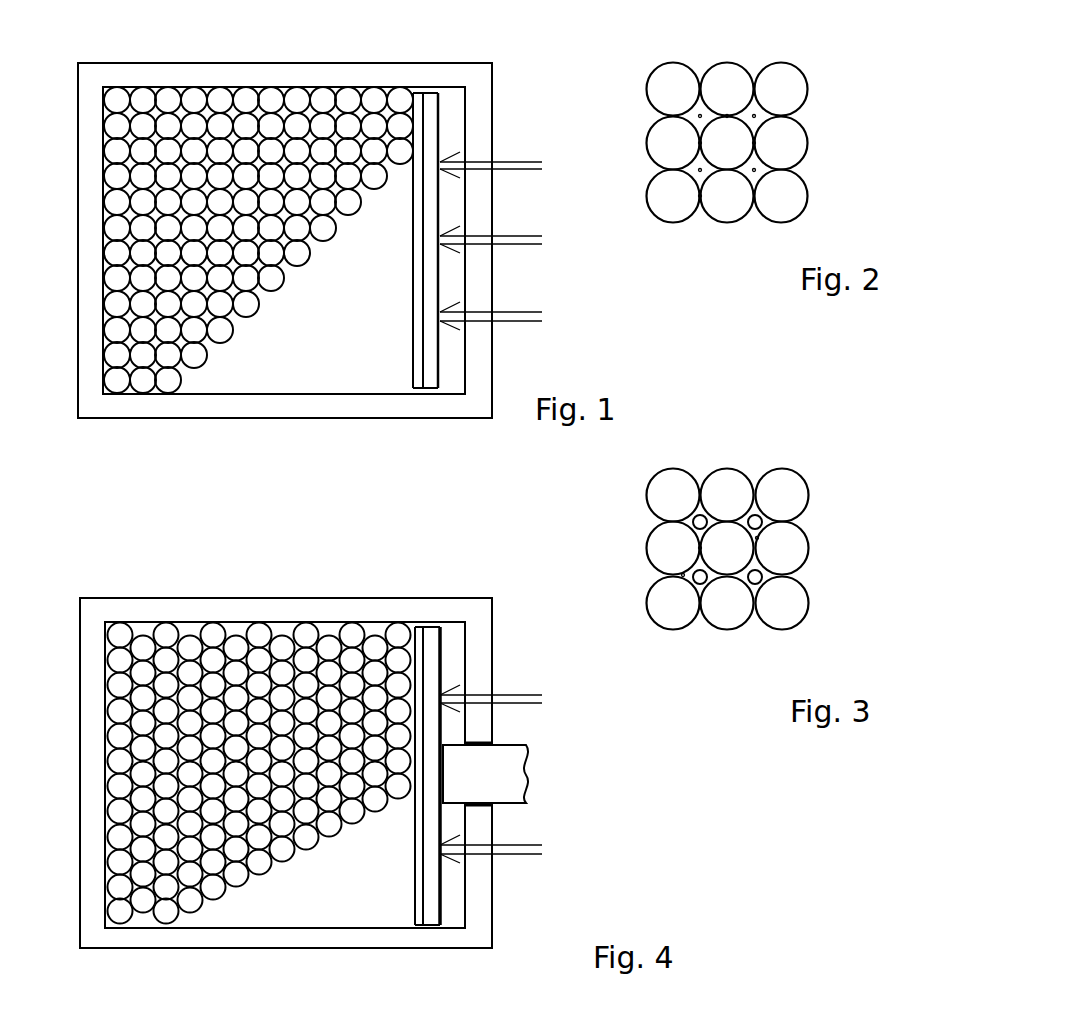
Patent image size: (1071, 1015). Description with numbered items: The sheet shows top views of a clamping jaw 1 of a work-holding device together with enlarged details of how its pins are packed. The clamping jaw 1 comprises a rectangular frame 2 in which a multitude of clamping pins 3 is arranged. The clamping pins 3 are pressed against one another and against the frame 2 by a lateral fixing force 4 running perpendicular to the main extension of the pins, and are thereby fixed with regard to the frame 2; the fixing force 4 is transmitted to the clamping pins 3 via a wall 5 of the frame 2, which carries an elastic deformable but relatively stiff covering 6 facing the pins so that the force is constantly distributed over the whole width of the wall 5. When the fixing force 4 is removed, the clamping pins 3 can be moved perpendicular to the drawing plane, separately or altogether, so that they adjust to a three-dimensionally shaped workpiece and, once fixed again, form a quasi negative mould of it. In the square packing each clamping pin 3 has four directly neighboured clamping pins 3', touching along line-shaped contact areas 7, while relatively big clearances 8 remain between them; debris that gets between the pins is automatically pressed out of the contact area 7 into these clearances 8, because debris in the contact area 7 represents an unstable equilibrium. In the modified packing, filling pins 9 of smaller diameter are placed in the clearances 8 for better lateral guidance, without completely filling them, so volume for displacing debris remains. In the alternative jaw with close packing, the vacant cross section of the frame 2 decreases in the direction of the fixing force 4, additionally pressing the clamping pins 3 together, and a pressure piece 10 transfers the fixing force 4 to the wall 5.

In FIG. 1, the clamping jaw 1 is at (70, 364).
In FIG. 4, the clamping jaw 1 is at (75, 792).
In FIG. 1, the frame 2 is at (300, 408).
In FIG. 4, the frame 2 is at (262, 612).
In FIG. 1, the clamping pin 3 is at (258, 208).
In FIG. 2, the clamping pin 3 is at (742, 139).
In FIG. 3, the clamping pin 3 is at (705, 545).
In FIG. 4, the clamping pin 3 is at (259, 733).
In FIG. 2, the neighboured clamping pin 3' is at (724, 140).
In FIG. 3, the neighboured clamping pin 3' is at (727, 545).
In FIG. 1, the fixing force 4 is at (513, 318).
In FIG. 4, the fixing force 4 is at (515, 700).
In FIG. 1, the wall 5 is at (430, 130).
In FIG. 4, the wall 5 is at (433, 882).
In FIG. 1, the covering 6 is at (416, 390).
In FIG. 4, the covering 6 is at (420, 912).
In FIG. 2, the contact area 7 is at (710, 124).
In FIG. 3, the contact area 7 is at (698, 547).
In FIG. 2, the clearance 8 is at (697, 108).
In FIG. 3, the clearance 8 is at (724, 543).
In FIG. 3, the filling pin 9 is at (766, 545).
In FIG. 4, the pressure piece 10 is at (505, 782).